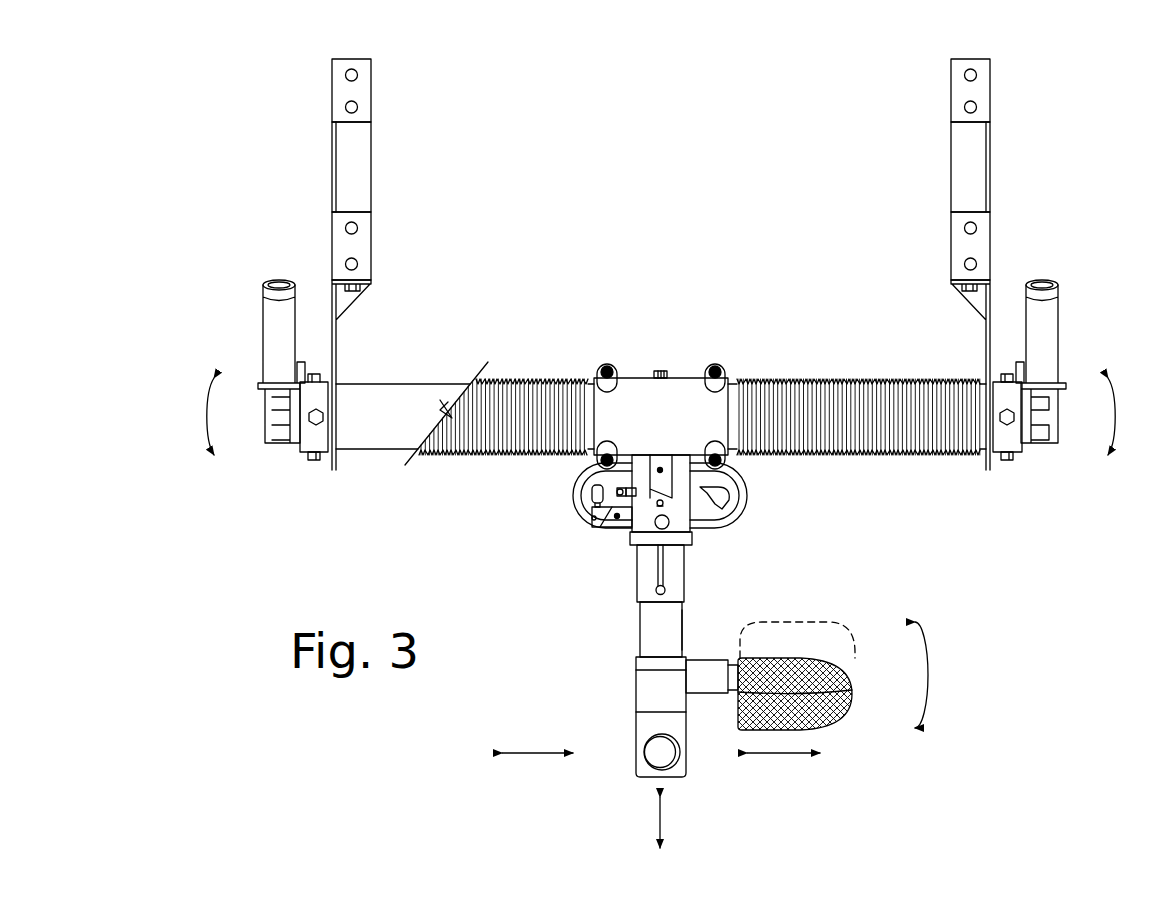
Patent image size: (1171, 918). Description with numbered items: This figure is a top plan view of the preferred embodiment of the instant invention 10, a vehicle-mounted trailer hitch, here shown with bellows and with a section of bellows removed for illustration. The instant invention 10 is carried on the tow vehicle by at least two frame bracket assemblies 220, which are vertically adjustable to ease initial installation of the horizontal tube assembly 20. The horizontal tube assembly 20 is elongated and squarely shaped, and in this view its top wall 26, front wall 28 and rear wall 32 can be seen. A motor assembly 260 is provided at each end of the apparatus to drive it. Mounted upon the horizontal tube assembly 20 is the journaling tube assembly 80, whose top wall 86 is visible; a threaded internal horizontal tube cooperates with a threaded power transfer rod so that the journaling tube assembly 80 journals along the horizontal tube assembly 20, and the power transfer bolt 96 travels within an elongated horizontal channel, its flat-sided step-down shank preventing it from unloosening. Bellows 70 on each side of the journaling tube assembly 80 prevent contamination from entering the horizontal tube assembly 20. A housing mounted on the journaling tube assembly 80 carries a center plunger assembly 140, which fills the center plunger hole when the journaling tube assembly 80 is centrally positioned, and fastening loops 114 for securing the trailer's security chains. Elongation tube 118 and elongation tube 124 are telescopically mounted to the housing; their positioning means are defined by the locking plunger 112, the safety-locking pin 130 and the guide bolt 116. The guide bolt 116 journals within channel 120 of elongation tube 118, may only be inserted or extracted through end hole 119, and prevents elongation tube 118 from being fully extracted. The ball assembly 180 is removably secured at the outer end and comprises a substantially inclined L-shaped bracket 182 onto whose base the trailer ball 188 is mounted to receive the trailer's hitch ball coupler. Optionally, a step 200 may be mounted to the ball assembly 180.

The instant invention 10 is at (226, 189).
The frame bracket assembly 220 is at (372, 110).
The motor assembly 260 is at (252, 340).
The horizontal tube assembly 20 is at (436, 378).
The top wall 26 is at (412, 427).
The rear wall 32 is at (372, 384).
The front wall 28 is at (378, 451).
The bellows 70 is at (520, 379).
The journaling tube assembly 80 is at (636, 374).
The top wall 86 is at (661, 416).
The power transfer bolt 96 is at (661, 370).
The safety-locking pin 130 is at (726, 498).
The fastening loops 114 is at (744, 480).
The guide bolt 116 is at (670, 522).
The center plunger assembly 140 is at (645, 471).
The locking plunger 112 is at (612, 529).
The elongation tube 118 is at (676, 561).
The end hole 119 is at (667, 590).
The channel 120 is at (656, 570).
The elongation tube 124 is at (672, 625).
The bracket 182 is at (650, 660).
The ball assembly 180 is at (692, 769).
The trailer ball 188 is at (644, 752).
The step 200 is at (843, 733).